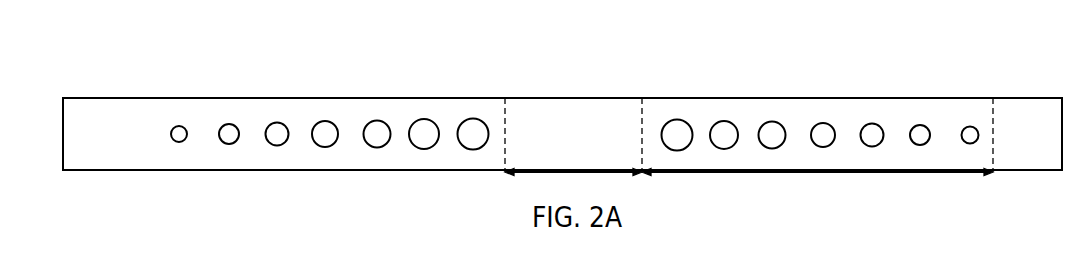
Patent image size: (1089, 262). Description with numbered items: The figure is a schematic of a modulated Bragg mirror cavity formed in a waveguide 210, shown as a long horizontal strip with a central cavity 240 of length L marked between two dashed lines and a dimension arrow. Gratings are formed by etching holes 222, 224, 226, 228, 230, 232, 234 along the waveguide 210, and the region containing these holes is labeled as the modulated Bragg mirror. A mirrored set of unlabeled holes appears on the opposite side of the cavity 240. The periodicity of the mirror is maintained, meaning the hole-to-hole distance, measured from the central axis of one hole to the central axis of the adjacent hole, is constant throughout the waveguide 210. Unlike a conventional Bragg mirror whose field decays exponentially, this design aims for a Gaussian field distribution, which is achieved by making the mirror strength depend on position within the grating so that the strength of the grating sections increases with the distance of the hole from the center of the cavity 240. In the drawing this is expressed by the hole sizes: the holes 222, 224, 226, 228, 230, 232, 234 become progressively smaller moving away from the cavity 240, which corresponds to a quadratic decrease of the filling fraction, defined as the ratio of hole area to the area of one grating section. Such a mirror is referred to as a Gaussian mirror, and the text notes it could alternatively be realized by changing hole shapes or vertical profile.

The waveguide 210 is at (1028, 128).
The cavity 240 is at (578, 132).
The hole 222 is at (670, 133).
The hole 224 is at (720, 135).
The hole 226 is at (768, 133).
The fourth hole of modulated Bragg mirror 228 is at (823, 135).
The fifth hole of modulated Bragg mirror 230 is at (866, 137).
The sixth hole of modulated Bragg mirror 232 is at (922, 135).
The seventh hole of modulated Bragg mirror 234 is at (968, 133).